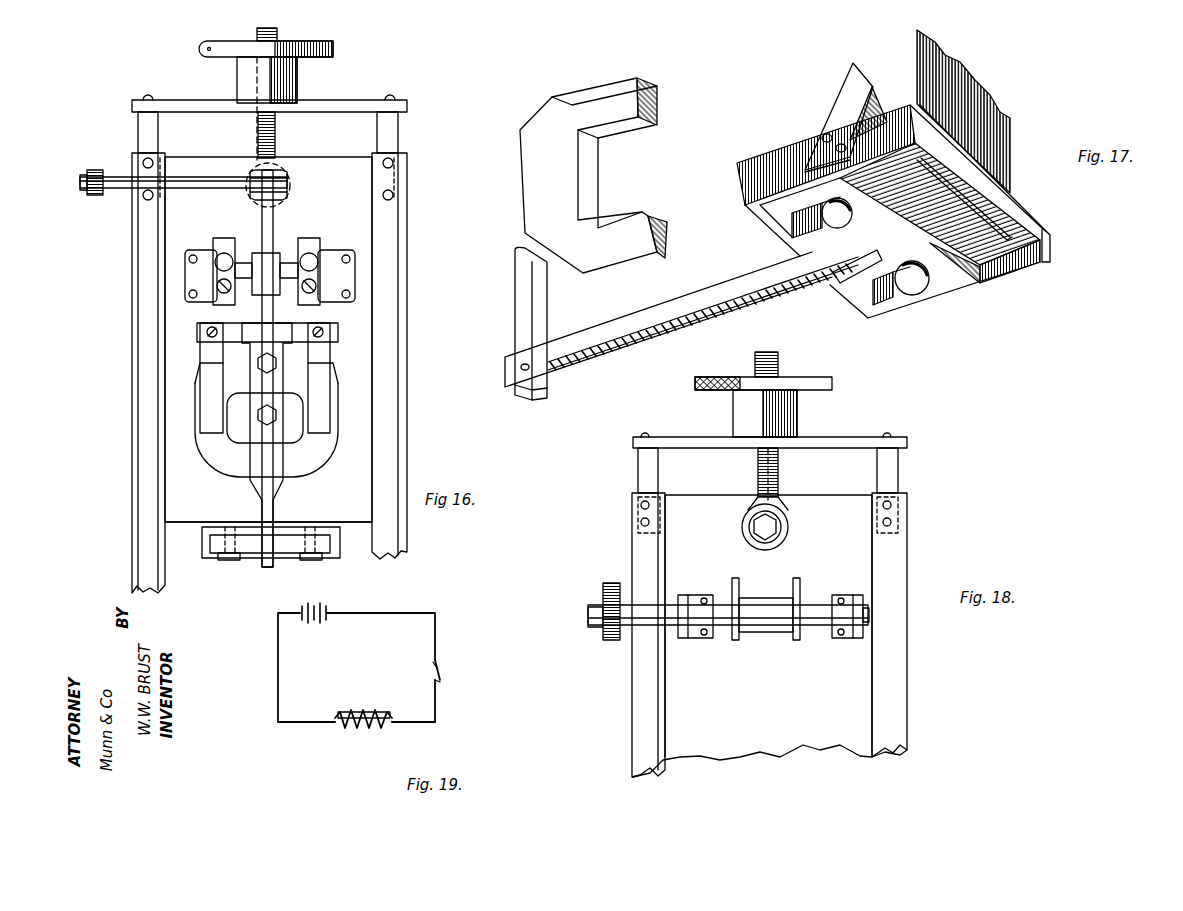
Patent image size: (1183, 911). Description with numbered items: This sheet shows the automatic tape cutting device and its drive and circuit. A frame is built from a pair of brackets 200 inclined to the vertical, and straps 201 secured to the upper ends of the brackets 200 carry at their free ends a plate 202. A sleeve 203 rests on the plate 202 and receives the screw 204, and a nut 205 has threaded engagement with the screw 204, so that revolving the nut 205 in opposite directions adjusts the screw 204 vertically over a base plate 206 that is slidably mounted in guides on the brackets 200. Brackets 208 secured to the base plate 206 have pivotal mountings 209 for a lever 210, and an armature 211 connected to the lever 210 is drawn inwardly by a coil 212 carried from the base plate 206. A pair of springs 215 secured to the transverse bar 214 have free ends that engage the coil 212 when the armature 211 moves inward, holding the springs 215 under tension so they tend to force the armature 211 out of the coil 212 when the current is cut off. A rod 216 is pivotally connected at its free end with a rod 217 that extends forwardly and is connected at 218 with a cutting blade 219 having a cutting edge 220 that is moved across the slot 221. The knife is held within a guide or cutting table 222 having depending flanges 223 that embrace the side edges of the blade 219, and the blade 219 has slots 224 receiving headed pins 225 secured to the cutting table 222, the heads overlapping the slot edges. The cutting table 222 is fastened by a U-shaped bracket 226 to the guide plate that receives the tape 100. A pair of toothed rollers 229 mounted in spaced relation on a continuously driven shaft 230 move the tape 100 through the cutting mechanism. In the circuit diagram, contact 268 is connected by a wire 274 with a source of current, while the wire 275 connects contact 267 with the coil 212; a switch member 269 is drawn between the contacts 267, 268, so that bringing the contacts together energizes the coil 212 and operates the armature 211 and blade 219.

In FIG. 17, the tape 100 is at (1003, 138).
In FIG. 16, the brackets 200 is at (140, 360).
In FIG. 18, the brackets 200 is at (785, 383).
In FIG. 16, the straps 201 is at (140, 131).
In FIG. 18, the straps 201 is at (647, 474).
In FIG. 16, the plate 202 is at (333, 111).
In FIG. 16, the sleeve 203 is at (297, 76).
In FIG. 18, the sleeve 203 is at (797, 412).
In FIG. 16, the screw 204 is at (256, 140).
In FIG. 18, the screw 204 is at (778, 475).
In FIG. 16, the nut 205 is at (207, 48).
In FIG. 16, the base plate 206 is at (363, 225).
In FIG. 18, the base plate 206 is at (863, 678).
In FIG. 16, the brackets 208 is at (225, 252).
In FIG. 16, the pivotal mountings 209 is at (205, 268).
In FIG. 16, the lever 210 is at (275, 212).
In FIG. 16, the armature 211 is at (247, 425).
In FIG. 17, the armature 211 is at (567, 173).
In FIG. 16, the coil 212 is at (312, 463).
In FIG. 19, the coil 212 is at (363, 728).
In FIG. 16, the transverse bar 214 is at (215, 322).
In FIG. 16, the springs 215 is at (318, 385).
In FIG. 17, the rod 216 is at (533, 308).
In FIG. 19, the rod 216 is at (303, 722).
In FIG. 17, the rod 217 is at (606, 340).
In FIG. 17, the connection 218 is at (843, 267).
In FIG. 17, the cutting blade 219 is at (817, 242).
In FIG. 17, the cutting edge 220 is at (930, 213).
In FIG. 17, the slot 221 is at (1008, 207).
In FIG. 17, the cutting table 222 is at (990, 223).
In FIG. 17, the depending flanges 223 is at (1013, 277).
In FIG. 17, the slots 224 is at (793, 223).
In FIG. 17, the headed pins 225 is at (838, 217).
In FIG. 17, the U-shaped bracket 226 is at (847, 108).
In FIG. 18, the toothed rollers 229 is at (737, 583).
In FIG. 16, the shaft 230 is at (118, 192).
In FIG. 18, the shaft 230 is at (645, 613).
In FIG. 19, the contact 267 is at (440, 685).
In FIG. 19, the contact 268 is at (443, 672).
In FIG. 19, the switch arm 269 is at (438, 668).
In FIG. 19, the wire 274 is at (397, 613).
In FIG. 19, the wire 275 is at (412, 722).